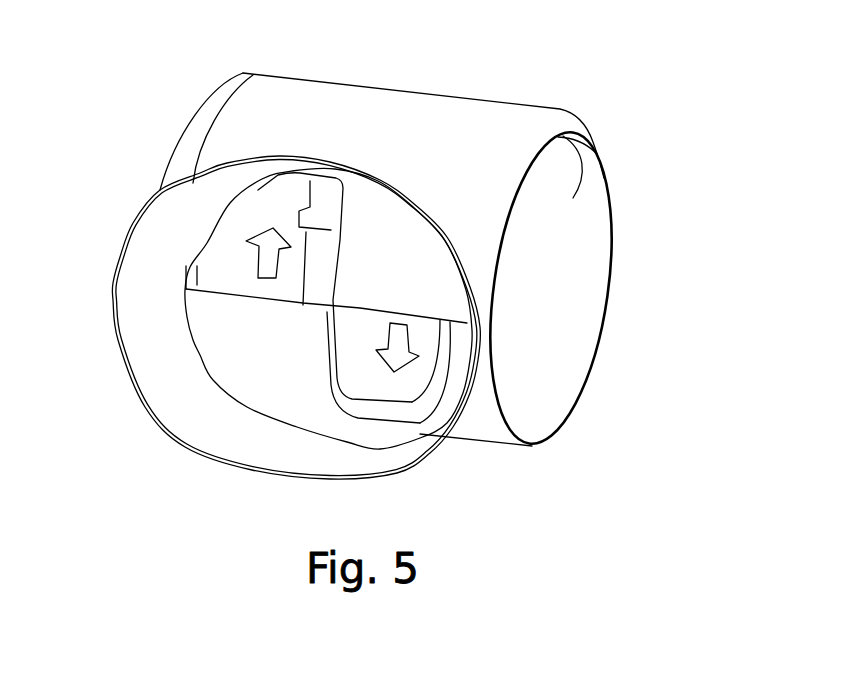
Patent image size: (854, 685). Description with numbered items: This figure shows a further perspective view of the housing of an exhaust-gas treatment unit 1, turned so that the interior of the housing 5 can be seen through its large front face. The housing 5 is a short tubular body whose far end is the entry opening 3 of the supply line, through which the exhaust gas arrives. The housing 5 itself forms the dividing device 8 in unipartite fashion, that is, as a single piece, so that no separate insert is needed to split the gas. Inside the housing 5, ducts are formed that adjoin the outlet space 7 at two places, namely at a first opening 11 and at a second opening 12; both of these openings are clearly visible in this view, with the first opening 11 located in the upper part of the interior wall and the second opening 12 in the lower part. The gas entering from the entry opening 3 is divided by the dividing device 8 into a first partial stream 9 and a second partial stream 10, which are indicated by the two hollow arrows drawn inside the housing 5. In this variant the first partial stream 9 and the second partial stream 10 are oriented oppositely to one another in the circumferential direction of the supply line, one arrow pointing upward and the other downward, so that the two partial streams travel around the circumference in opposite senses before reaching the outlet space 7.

The exhaust-gas treatment unit 1 is at (550, 70).
The entry opening 3 is at (608, 287).
The housing 5 is at (457, 117).
The outlet space 7 is at (120, 373).
The dividing device 8 is at (420, 292).
The first partial stream 9 is at (264, 264).
The second partial stream 10 is at (407, 340).
The first opening 11 is at (283, 207).
The second opening 12 is at (412, 385).